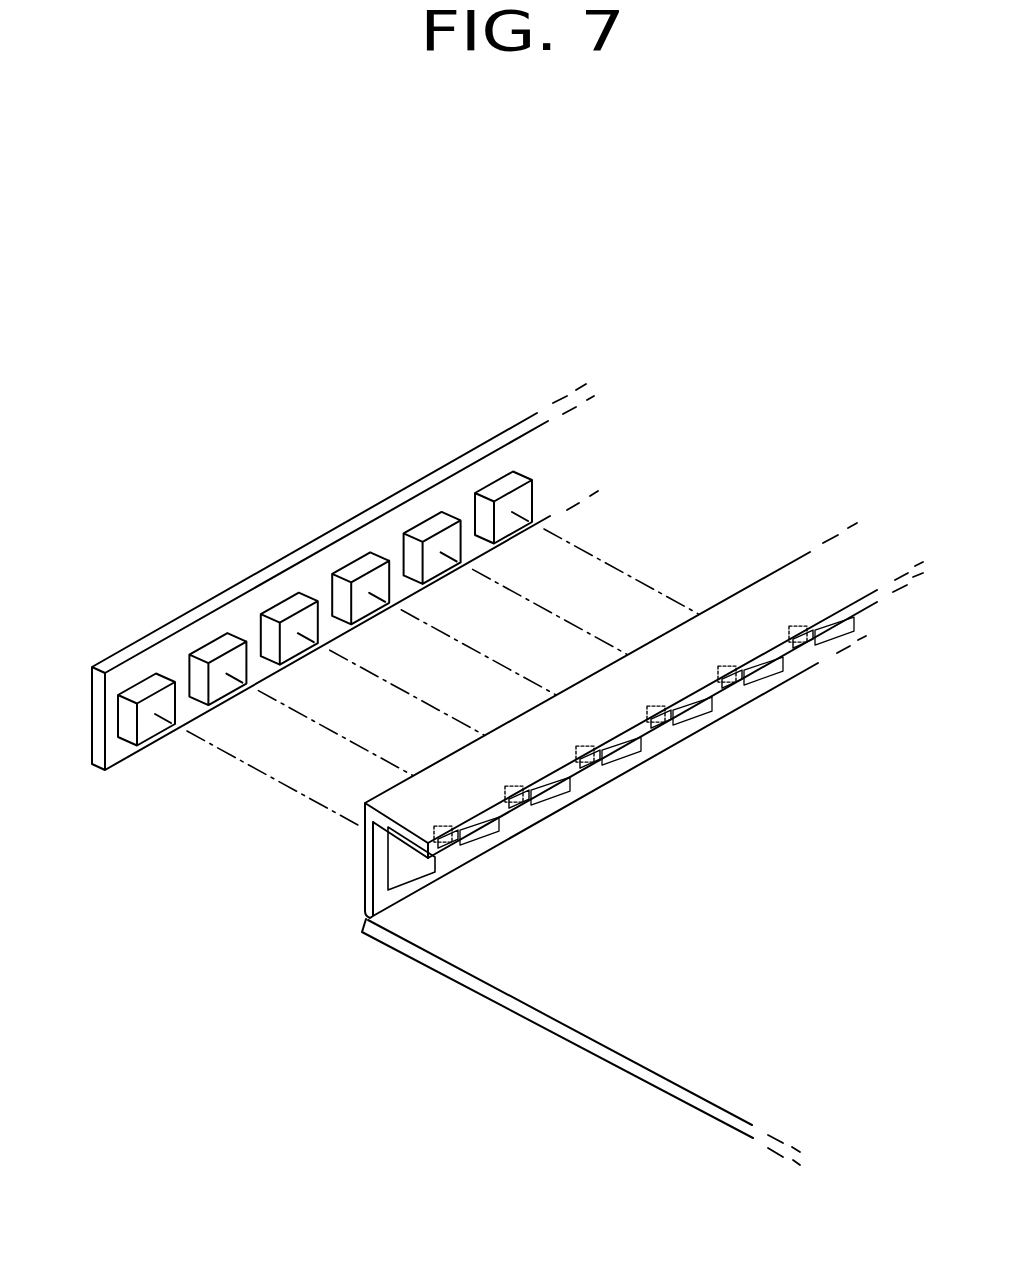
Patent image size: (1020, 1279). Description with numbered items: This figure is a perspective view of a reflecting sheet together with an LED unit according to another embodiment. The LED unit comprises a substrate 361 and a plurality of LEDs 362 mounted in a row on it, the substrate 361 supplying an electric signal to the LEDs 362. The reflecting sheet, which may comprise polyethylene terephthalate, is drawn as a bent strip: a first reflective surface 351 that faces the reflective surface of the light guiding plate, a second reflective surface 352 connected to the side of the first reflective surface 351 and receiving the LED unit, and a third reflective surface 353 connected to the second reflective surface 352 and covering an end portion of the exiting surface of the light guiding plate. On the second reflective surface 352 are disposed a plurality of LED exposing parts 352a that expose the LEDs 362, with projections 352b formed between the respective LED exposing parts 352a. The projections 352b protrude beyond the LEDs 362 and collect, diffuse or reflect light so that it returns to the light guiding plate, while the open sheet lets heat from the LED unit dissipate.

The first reflective surface 351 is at (592, 1047).
The second reflective surface 352 is at (368, 922).
The LED exposing part 352a is at (484, 846).
The projection 352b is at (787, 625).
The third reflective surface 353 is at (365, 832).
The substrate 361 is at (325, 540).
The LED 362 is at (205, 643).